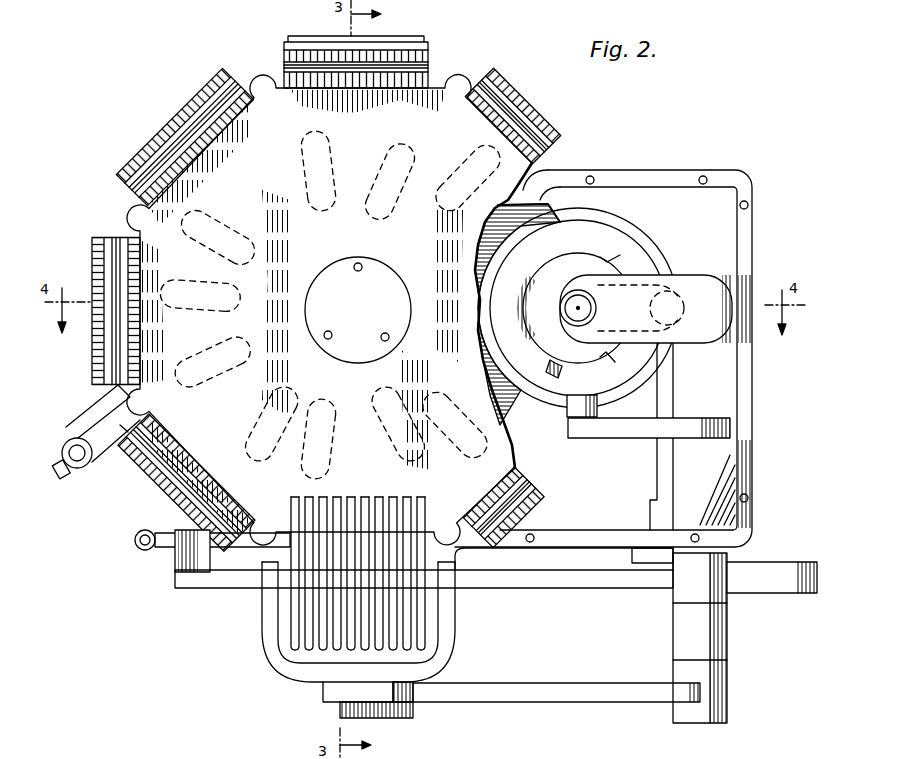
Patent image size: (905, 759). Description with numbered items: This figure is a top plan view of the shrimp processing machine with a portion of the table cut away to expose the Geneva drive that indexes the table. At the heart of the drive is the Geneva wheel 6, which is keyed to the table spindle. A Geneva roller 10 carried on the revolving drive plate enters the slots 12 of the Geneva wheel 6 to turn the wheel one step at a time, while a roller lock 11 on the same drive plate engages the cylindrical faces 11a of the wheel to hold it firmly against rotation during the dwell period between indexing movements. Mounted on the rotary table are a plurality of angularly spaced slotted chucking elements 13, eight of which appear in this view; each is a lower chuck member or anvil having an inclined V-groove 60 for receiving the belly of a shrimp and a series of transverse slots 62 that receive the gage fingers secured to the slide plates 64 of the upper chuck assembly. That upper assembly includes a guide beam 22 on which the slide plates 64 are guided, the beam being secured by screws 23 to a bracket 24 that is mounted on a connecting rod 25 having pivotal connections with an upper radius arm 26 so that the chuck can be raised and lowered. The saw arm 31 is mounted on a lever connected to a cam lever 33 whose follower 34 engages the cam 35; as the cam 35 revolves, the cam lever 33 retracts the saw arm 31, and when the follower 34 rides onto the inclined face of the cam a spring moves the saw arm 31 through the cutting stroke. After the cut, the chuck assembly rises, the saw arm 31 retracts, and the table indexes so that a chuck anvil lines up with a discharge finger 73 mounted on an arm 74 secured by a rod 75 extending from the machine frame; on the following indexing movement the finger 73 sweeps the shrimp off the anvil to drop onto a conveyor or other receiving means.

The transverse slots 62 is at (512, 92).
The slotted chucking elements 13 is at (517, 307).
The cylindrical faces 11a is at (505, 215).
The Geneva wheel 6 is at (555, 258).
The roller lock 11 is at (594, 254).
The cam 35 is at (664, 258).
The Geneva roller 10 is at (648, 306).
The slots 12 is at (540, 378).
The follower 34 is at (565, 412).
The cam lever 33 is at (606, 440).
The V-groove 60 is at (522, 485).
The screws 23 is at (456, 556).
The bracket 24 is at (457, 614).
The saw arm 31 is at (555, 590).
The upper radius arm 26 is at (500, 700).
The connecting rod 25 is at (323, 694).
The slide plates 64 is at (290, 630).
The guide beam 22 is at (290, 553).
The discharge finger 73 is at (128, 448).
The arm 74 is at (100, 422).
The rod 75 is at (80, 482).